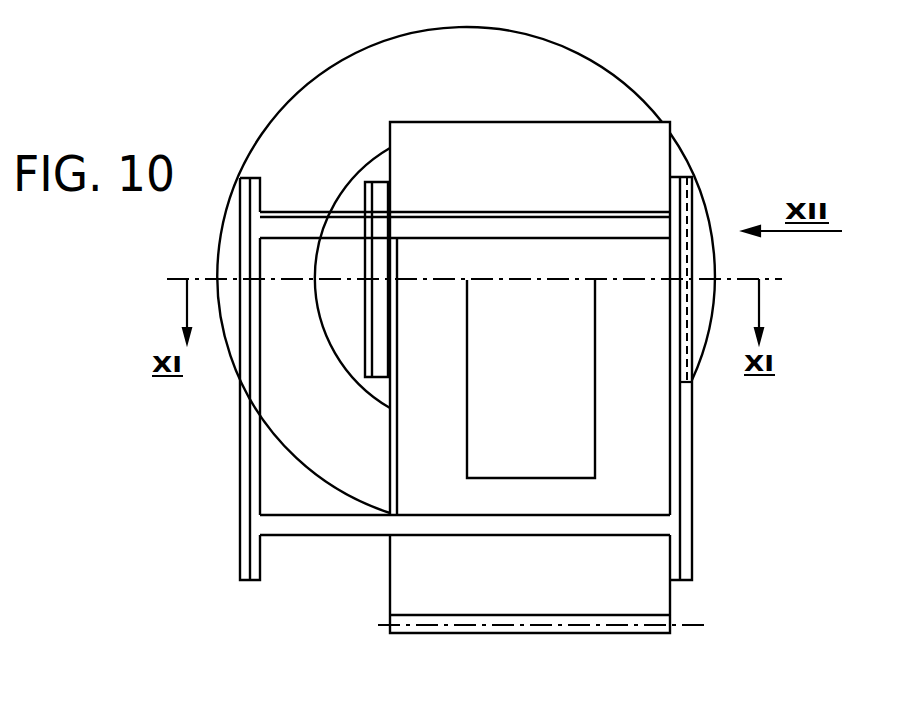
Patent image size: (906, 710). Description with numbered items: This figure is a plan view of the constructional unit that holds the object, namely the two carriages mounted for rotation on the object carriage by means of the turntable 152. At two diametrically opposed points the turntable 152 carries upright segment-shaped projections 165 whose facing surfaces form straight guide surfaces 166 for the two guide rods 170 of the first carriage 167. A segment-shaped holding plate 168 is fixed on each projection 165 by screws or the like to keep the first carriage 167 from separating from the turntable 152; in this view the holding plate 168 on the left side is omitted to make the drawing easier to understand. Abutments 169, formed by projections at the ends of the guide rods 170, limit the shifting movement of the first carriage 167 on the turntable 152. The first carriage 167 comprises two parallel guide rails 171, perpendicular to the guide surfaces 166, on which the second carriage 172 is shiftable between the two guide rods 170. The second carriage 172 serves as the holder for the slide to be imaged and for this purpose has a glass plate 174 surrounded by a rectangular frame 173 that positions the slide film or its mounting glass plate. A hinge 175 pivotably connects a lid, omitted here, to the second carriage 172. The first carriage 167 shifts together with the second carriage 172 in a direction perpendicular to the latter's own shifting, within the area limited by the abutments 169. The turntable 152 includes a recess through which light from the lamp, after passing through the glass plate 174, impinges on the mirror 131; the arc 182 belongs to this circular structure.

The mirror 131 is at (379, 182).
The turntable 152 is at (560, 96).
The segment-shaped projection 165 is at (231, 226).
The guide surface 166 is at (242, 368).
The first carriage 167 is at (305, 547).
The holding plate 168 is at (479, 263).
The abutment 169 is at (243, 178).
The guide rod 170 is at (261, 347).
The guide rail 171 is at (288, 212).
The second carriage 172 is at (557, 584).
The rectangular frame 173 is at (456, 364).
The glass plate 174 is at (551, 380).
The hinge 175 is at (698, 625).
The inner ring 182 is at (314, 292).